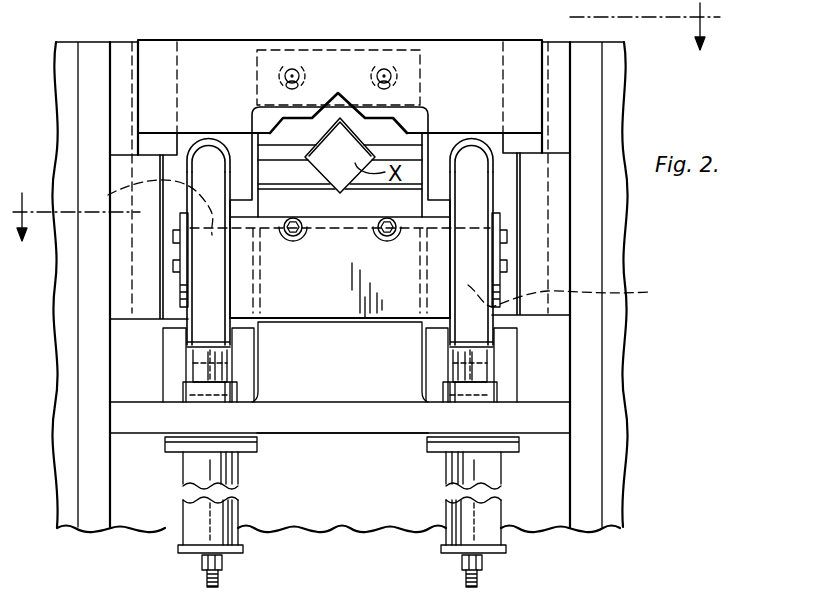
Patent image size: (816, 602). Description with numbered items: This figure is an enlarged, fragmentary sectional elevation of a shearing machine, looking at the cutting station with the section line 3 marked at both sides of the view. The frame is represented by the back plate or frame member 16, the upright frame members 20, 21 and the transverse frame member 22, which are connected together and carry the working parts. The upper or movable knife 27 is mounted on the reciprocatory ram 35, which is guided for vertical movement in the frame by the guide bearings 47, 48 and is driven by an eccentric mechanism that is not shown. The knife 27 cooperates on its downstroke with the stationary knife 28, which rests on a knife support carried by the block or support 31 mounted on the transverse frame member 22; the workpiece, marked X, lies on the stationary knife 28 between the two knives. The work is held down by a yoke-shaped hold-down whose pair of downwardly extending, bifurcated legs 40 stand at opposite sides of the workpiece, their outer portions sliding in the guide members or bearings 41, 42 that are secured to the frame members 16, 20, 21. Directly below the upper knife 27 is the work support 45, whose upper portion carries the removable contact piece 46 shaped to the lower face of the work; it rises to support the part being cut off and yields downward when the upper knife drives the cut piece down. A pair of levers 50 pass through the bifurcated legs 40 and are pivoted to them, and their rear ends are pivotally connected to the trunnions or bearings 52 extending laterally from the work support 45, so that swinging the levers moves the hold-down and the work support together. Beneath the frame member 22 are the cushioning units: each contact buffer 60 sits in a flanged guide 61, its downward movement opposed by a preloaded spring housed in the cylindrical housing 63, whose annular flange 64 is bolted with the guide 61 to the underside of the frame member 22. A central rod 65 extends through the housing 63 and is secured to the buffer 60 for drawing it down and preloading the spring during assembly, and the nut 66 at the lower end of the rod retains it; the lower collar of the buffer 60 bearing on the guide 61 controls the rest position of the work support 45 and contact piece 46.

The section line 3- 3 is at (377, 122).
The back plate or frame member 16 is at (617, 454).
The upright frame member 20 is at (90, 470).
The upright frame member 21 is at (597, 422).
The transverse frame member 22 is at (335, 432).
The upper or movable knife 27 is at (353, 120).
The stationary knife 28 is at (308, 175).
The block or support 31 is at (398, 374).
The reciprocatory ram 35 is at (241, 60).
The bifurcated legs 40 is at (222, 180).
The guide member or bearing 41 is at (560, 234).
The guide member or bearing 42 is at (122, 279).
The work support 45 is at (298, 307).
The removable contact piece 46 is at (328, 212).
The guide bearing 47 is at (118, 100).
The guide bearing 48 is at (147, 52).
The levers 50 is at (206, 146).
The trunnions or bearings 52 is at (380, 243).
The contact buffer 60 is at (198, 362).
The flanged guide 61 is at (198, 392).
The cylindrical housing 63 is at (190, 508).
The annular flange 64 is at (257, 450).
The central rod 65 is at (207, 578).
The lock nut 66 is at (222, 563).